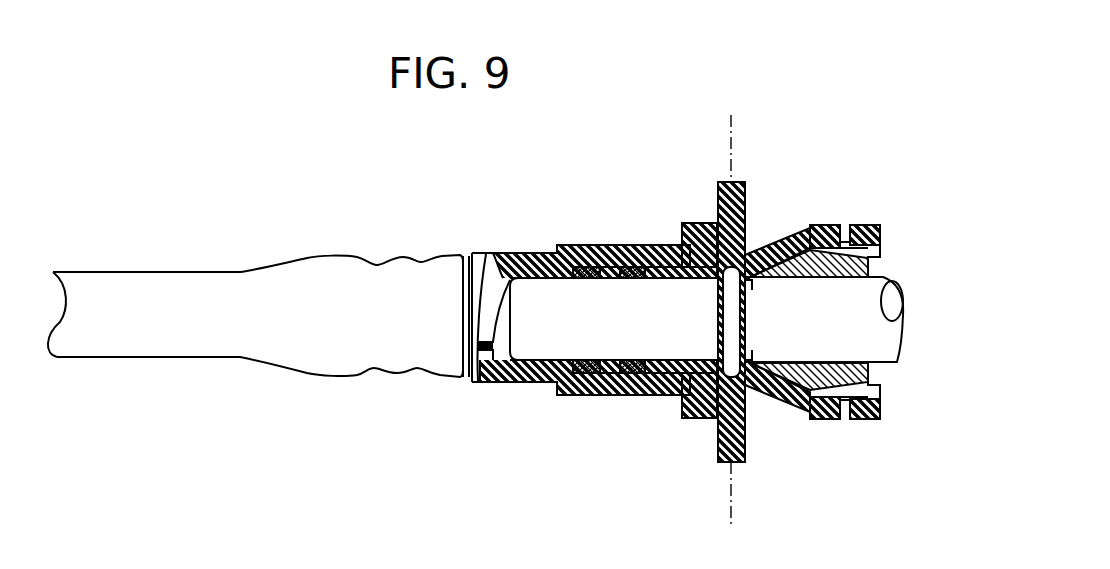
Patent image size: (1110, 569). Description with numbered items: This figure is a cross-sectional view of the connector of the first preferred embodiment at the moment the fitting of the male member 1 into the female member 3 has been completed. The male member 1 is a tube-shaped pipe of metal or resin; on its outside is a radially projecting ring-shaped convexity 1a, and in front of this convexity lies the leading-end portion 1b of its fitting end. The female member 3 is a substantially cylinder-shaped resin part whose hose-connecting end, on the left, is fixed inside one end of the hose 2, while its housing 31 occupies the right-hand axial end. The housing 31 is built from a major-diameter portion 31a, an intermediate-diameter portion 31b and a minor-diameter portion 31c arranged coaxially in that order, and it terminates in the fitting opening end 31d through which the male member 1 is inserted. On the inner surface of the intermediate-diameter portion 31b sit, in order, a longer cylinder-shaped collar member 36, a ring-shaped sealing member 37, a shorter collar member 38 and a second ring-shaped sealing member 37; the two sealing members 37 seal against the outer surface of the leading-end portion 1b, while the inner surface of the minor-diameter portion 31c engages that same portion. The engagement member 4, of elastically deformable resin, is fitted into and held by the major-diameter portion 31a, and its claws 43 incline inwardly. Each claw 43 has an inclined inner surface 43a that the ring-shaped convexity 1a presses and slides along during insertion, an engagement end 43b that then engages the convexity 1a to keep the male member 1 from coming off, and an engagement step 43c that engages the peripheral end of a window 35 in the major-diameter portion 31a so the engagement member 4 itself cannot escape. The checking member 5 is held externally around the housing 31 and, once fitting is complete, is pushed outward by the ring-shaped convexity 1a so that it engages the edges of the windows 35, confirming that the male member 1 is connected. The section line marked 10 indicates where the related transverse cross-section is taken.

The male member 1 is at (897, 362).
The ring-shaped convexity 1a is at (697, 420).
The leading-end portion 1b is at (505, 384).
The hose 2 is at (257, 270).
The female member 3 is at (556, 240).
The engagement member 4 is at (878, 215).
The checking member 5 is at (750, 192).
The section line for FIG. 10 is at (823, 109).
The housing 31 is at (577, 243).
The major-diameter portion 31a is at (703, 228).
The intermediate-diameter portion 31b is at (642, 252).
The minor-diameter portion 31c is at (513, 262).
The fitting opening end 31d is at (843, 228).
The window 35 is at (812, 418).
The collar member 36 is at (662, 372).
The ring-shaped sealing member 37 is at (572, 374).
The collar member 38 is at (602, 386).
The claw 43 is at (771, 248).
The inclined inner surface 43a is at (800, 282).
The engagement end 43b is at (746, 282).
The engagement step 43c is at (802, 238).